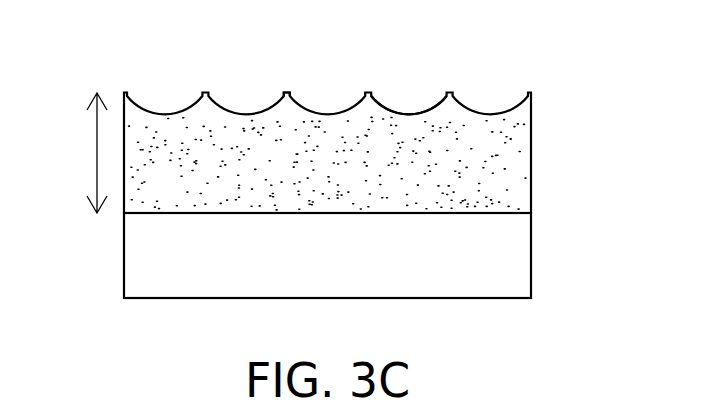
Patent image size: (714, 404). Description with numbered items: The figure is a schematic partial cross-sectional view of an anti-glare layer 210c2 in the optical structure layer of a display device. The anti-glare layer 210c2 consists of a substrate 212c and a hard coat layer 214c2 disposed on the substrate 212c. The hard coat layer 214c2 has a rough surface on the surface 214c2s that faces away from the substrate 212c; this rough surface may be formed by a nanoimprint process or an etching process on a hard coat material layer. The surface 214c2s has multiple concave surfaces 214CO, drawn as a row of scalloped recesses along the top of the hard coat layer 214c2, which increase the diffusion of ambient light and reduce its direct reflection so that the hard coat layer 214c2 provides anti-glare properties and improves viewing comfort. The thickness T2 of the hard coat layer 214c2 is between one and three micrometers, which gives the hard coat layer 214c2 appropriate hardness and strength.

The anti-glare layer 210c2 is at (332, 168).
The substrate 212c is at (137, 258).
The hard coat layer 214c2 is at (518, 160).
The concave surfaces 214CO is at (485, 110).
The surface 214c2s is at (296, 100).
The thickness T2 is at (87, 153).